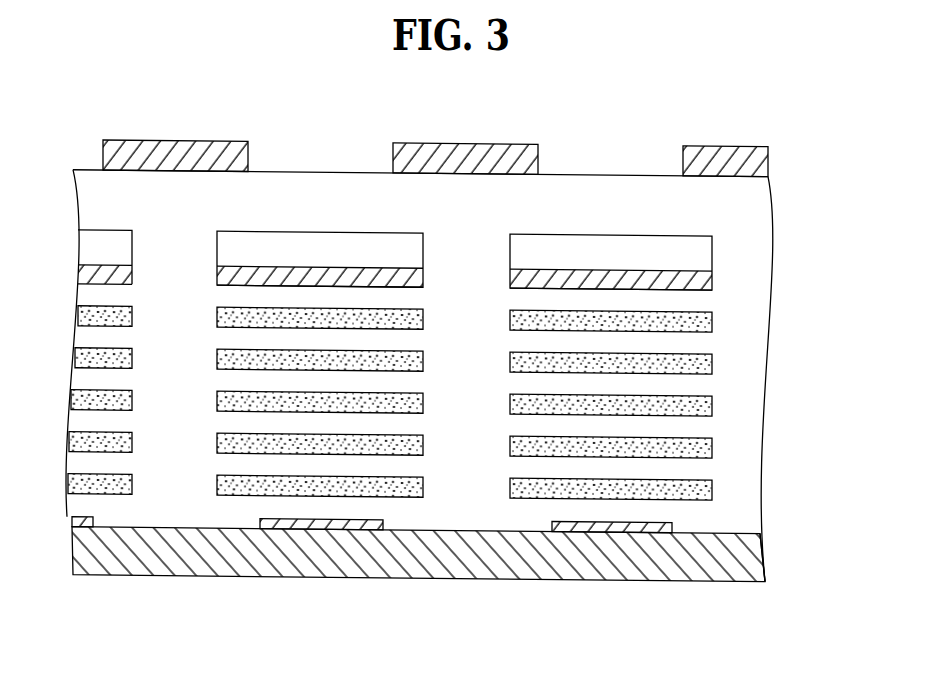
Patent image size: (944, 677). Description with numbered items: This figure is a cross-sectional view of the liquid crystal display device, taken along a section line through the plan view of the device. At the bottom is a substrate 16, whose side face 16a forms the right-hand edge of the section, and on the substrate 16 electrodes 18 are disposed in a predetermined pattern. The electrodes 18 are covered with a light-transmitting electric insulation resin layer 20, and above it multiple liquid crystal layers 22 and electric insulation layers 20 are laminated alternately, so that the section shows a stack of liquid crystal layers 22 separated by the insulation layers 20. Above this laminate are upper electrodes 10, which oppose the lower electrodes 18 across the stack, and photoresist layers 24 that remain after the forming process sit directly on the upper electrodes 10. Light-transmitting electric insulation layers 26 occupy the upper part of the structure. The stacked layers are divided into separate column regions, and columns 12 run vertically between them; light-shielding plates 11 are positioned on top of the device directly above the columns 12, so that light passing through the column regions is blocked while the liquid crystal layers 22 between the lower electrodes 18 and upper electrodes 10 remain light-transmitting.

The upper electrodes 10 is at (310, 268).
The light-shielding plates 11 is at (247, 139).
The columns 12 is at (158, 210).
The substrate 16 is at (713, 572).
The side face of substrate 16a is at (759, 533).
The electrodes 18 is at (297, 527).
The light-transmitting electric insulation resin layer 20 is at (702, 380).
The liquid crystal layers 22 is at (712, 360).
The photoresist layers 24 is at (702, 248).
The light-transmitting electric insulation layers 26 is at (758, 194).